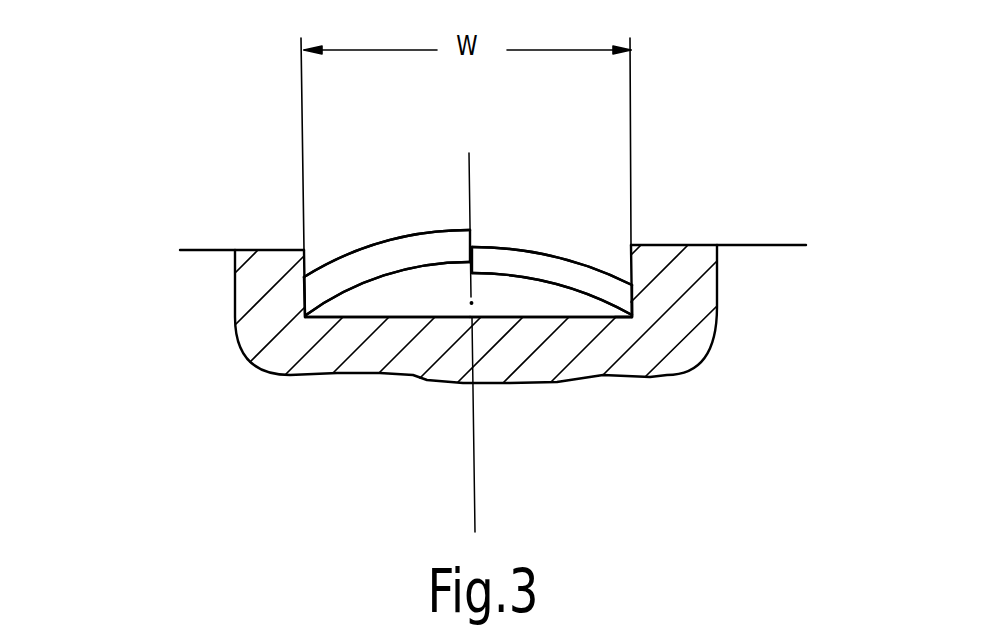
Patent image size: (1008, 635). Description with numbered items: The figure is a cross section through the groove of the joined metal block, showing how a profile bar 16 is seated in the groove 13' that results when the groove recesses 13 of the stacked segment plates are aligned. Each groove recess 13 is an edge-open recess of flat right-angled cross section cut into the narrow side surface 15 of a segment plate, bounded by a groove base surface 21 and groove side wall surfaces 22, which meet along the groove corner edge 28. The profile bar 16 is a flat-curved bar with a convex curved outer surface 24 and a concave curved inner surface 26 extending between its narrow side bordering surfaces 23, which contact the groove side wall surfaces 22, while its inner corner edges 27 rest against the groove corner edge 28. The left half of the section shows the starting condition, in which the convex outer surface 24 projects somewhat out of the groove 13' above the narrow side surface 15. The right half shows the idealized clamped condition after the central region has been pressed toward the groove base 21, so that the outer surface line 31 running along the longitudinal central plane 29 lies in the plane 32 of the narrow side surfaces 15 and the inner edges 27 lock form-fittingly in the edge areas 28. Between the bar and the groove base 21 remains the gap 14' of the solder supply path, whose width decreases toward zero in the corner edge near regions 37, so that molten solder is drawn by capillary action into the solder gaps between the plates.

The groove recess 13 is at (387, 410).
The groove 13' is at (552, 374).
The gap 14' is at (552, 212).
The narrow side surface 15 is at (263, 250).
The profile bar 16 is at (428, 232).
The groove base surface 21 is at (448, 317).
The groove side wall surface 22 is at (305, 262).
The narrow side bordering surface 23 is at (306, 283).
The convex curved outer surface 24 is at (367, 248).
The concave curved inner surface 26 is at (343, 290).
The inner corner edge 27 is at (624, 298).
The groove corner edge 28 is at (633, 317).
The longitudinal central plane 29 is at (471, 180).
The outer surface line 31 is at (473, 247).
The plane 32 is at (775, 245).
The corner edge near region 37 is at (597, 318).